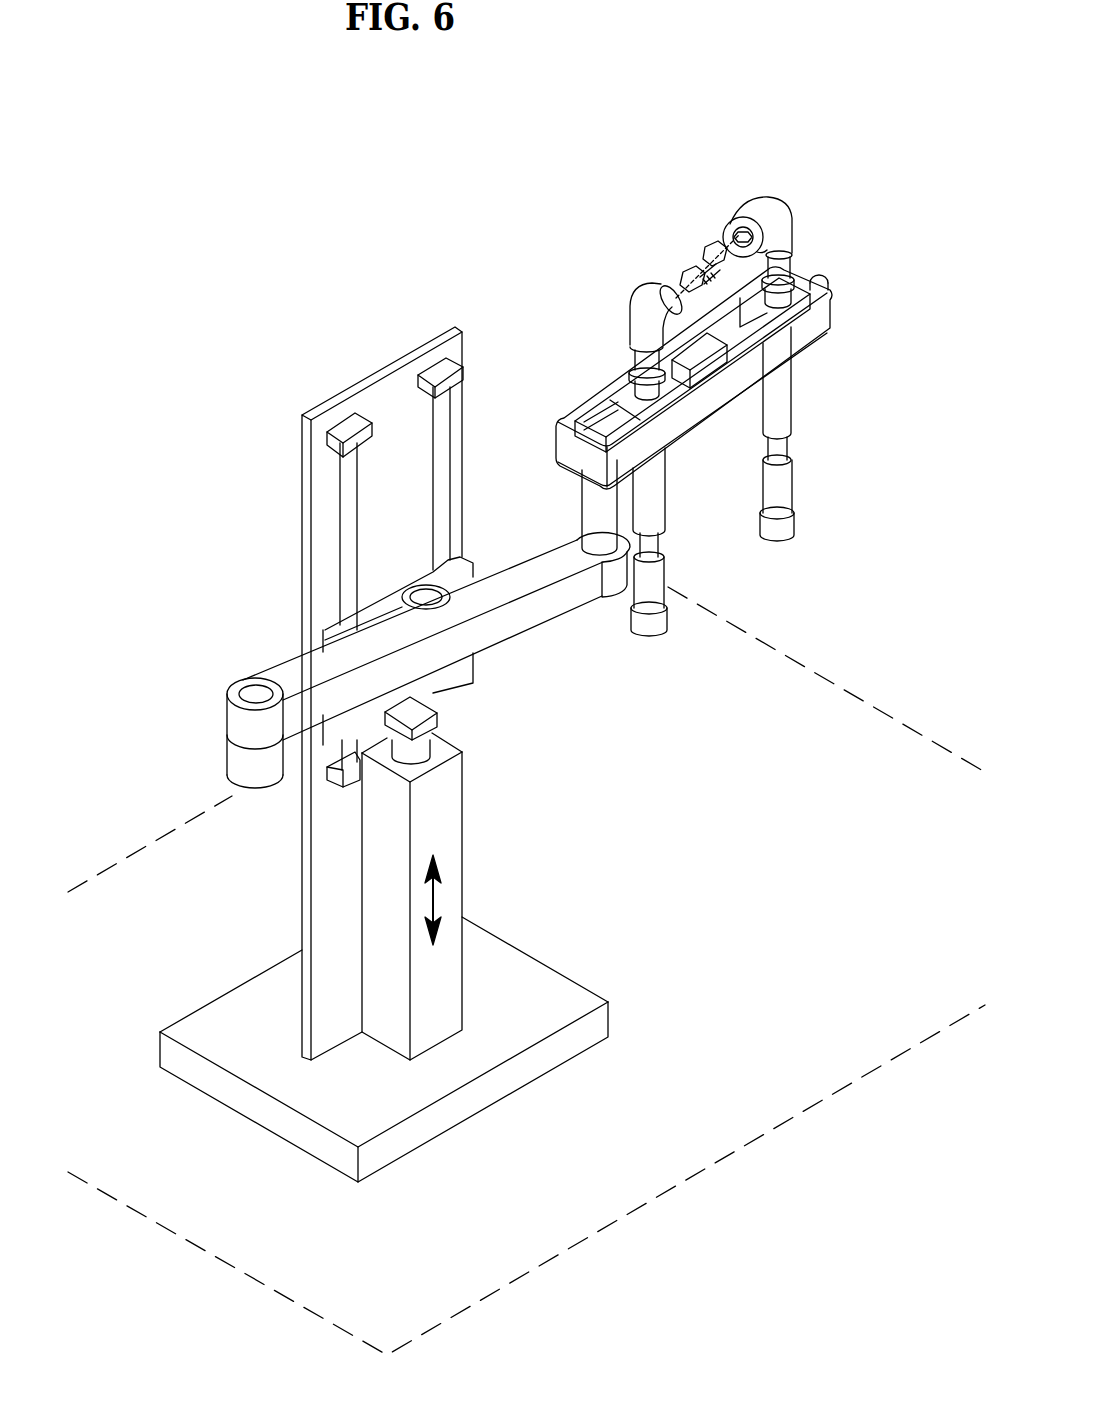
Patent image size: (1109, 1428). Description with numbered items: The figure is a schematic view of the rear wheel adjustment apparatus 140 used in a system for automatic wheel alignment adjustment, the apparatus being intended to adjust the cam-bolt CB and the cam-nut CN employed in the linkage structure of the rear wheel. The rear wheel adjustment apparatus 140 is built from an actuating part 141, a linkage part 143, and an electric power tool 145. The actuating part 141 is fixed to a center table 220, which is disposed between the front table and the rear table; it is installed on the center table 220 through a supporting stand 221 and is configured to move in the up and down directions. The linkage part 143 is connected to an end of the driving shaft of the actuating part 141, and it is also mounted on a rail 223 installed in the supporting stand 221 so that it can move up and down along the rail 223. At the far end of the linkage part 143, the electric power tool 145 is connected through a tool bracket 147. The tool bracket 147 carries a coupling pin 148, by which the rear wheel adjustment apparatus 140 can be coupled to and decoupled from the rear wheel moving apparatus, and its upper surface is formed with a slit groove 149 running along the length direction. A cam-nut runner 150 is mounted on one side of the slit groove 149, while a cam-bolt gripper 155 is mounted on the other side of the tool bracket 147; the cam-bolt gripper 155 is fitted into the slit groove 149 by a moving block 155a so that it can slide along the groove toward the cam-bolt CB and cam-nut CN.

The rear wheel adjustment apparatus 140 is at (290, 248).
The actuating part 141 is at (438, 1023).
The linkage part 143 is at (538, 612).
The electric power tool 145 is at (755, 173).
The tool bracket 147 is at (810, 332).
The coupling pin 148 is at (829, 283).
The slit groove 149 is at (778, 345).
The cam-nut runner 150 is at (782, 198).
The cam-bolt gripper 155 is at (640, 303).
The moving block 155a is at (622, 392).
The cam-nut CN is at (708, 246).
The cam-bolt CB is at (688, 268).
The center table 220 is at (725, 1167).
The supporting stand 221 is at (225, 1020).
The rail 223 is at (347, 513).